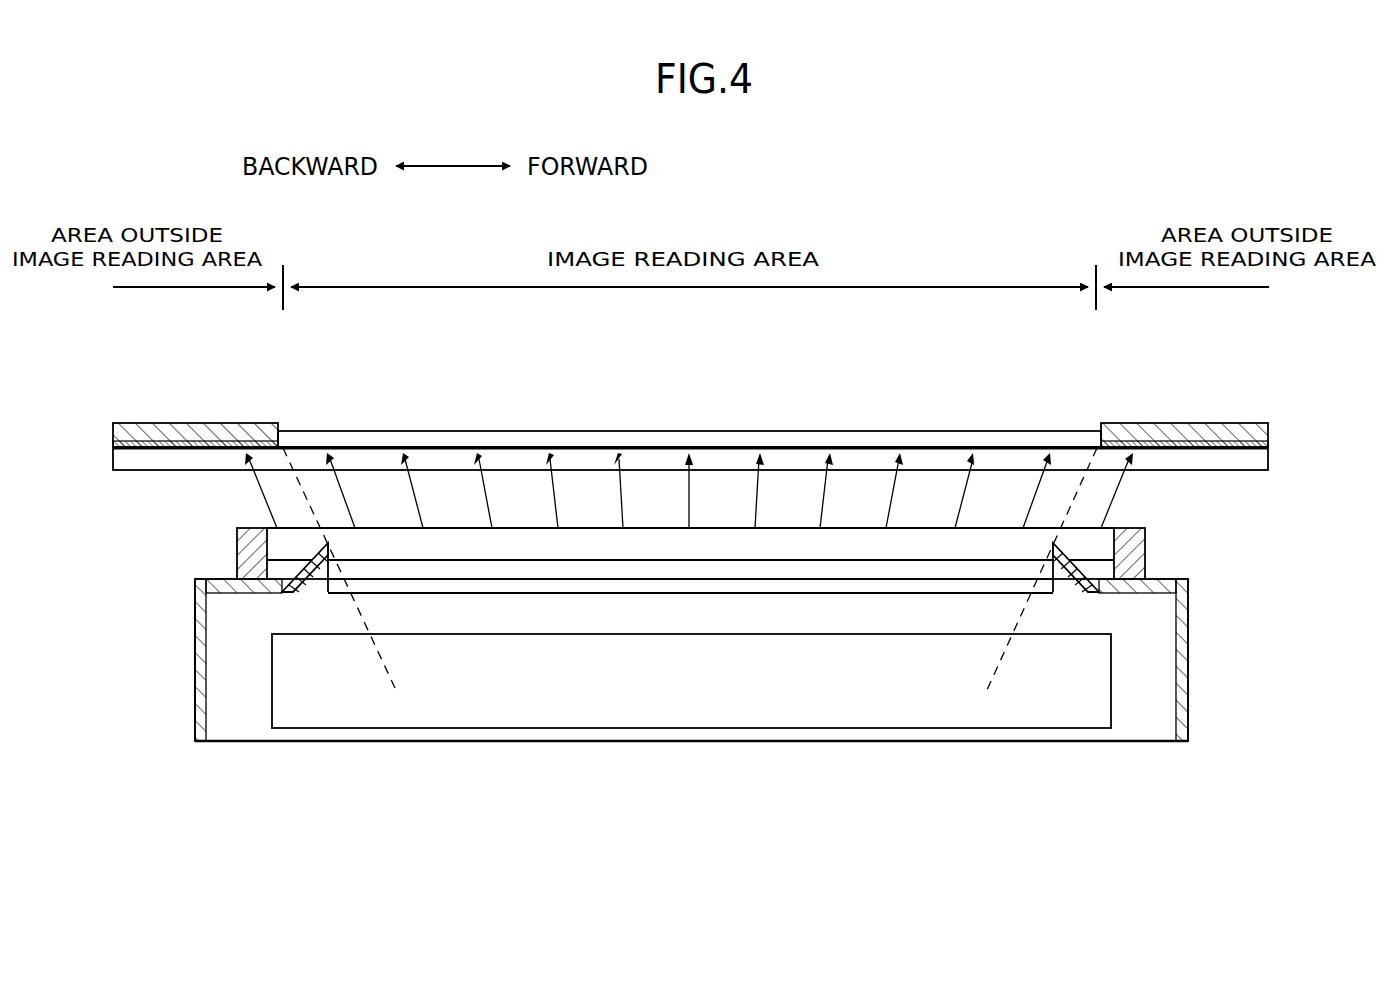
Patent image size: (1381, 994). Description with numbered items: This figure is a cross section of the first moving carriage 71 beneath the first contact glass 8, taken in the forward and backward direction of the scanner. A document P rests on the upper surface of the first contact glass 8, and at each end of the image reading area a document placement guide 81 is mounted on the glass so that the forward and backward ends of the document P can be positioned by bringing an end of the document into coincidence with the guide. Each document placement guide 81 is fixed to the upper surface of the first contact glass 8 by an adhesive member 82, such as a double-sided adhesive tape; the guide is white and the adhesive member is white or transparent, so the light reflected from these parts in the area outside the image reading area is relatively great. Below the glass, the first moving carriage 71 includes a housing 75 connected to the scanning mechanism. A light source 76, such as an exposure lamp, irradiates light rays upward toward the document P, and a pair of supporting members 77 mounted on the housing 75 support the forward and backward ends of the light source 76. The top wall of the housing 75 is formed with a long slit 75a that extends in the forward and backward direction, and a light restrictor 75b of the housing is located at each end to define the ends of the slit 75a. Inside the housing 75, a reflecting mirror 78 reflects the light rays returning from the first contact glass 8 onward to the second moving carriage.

The first contact glass 8 is at (128, 466).
The document P is at (572, 441).
The document placement guide 81 is at (203, 423).
The adhesive member 82 is at (115, 444).
The light source 76 is at (722, 550).
The supporting members 77 is at (237, 548).
The housing 75 is at (1189, 624).
The slit 75a is at (697, 585).
The light restrictor 75b is at (322, 547).
The reflecting mirror 78 is at (555, 700).
The first moving carriage 71 is at (185, 630).